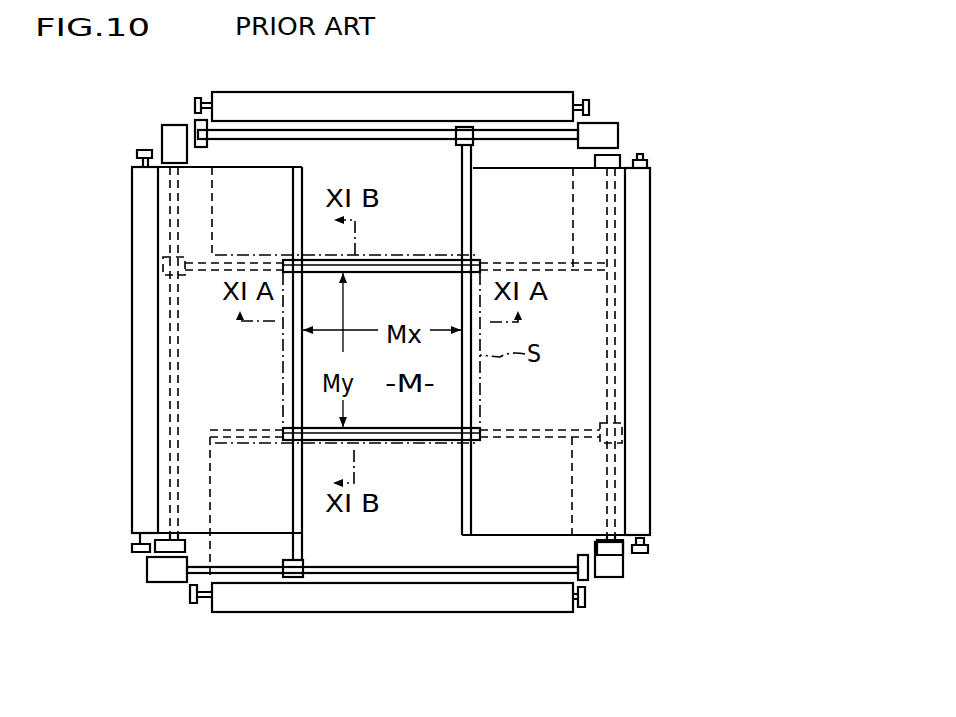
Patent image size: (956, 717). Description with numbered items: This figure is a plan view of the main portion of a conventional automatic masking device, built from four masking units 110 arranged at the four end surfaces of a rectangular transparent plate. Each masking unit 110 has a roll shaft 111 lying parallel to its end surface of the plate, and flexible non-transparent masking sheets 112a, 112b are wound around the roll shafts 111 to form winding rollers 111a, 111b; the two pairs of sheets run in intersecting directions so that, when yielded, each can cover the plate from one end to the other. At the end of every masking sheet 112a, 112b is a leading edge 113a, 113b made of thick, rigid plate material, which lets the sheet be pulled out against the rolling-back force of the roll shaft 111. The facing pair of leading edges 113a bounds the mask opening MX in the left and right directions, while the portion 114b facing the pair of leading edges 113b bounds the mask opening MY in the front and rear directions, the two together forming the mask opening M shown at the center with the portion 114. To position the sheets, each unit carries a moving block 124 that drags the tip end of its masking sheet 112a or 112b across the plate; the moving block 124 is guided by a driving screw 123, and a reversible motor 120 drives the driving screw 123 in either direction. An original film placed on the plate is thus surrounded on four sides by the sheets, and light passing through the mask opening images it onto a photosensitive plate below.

The masking unit 110 is at (572, 72).
The roll shaft 111 is at (582, 107).
The winding roller 111a is at (133, 388).
The winding roller 111b is at (399, 100).
The masking sheet 112a is at (515, 168).
The masking sheet 112b is at (212, 236).
The leading edge 113a is at (462, 215).
The leading edge 113b is at (212, 280).
The mask opening portion 114 is at (458, 411).
The mask opening portion 114b is at (288, 428).
The reversible motor 120 is at (172, 126).
The driving screw 123 is at (540, 130).
The moving block 124 is at (469, 127).